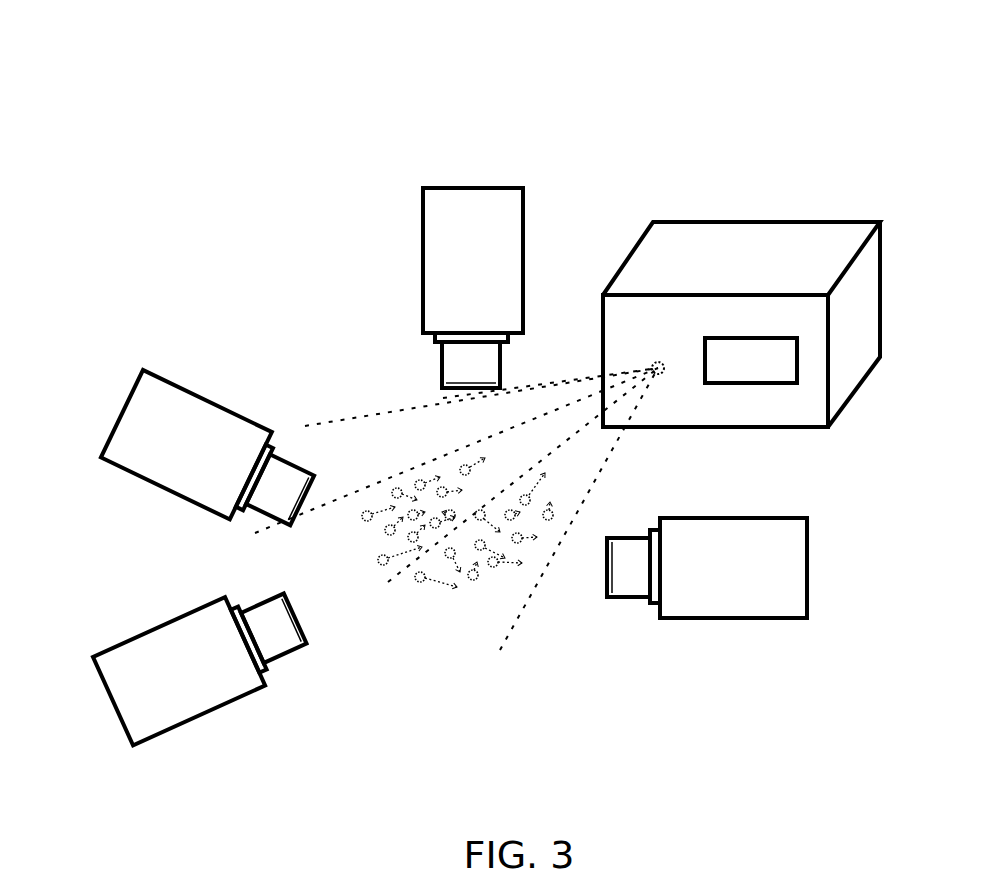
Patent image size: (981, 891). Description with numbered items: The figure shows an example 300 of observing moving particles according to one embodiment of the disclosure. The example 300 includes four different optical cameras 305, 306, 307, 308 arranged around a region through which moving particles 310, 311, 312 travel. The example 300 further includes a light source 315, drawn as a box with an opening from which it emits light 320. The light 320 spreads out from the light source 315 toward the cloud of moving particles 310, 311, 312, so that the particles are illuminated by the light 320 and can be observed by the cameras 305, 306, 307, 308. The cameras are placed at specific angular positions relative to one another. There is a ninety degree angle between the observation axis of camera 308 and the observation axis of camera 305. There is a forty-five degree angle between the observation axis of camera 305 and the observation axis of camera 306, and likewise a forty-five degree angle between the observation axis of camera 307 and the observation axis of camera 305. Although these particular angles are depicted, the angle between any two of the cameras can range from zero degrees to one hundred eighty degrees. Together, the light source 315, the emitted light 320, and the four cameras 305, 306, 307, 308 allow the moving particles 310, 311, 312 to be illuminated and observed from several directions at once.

The example 300 is at (236, 111).
The camera 305 is at (472, 188).
The camera 306 is at (138, 377).
The camera 307 is at (197, 610).
The camera 308 is at (707, 618).
The moving particle 310 is at (367, 521).
The moving particle 311 is at (420, 582).
The moving particle 312 is at (493, 567).
The light source 315 is at (758, 427).
The light 320 is at (620, 445).